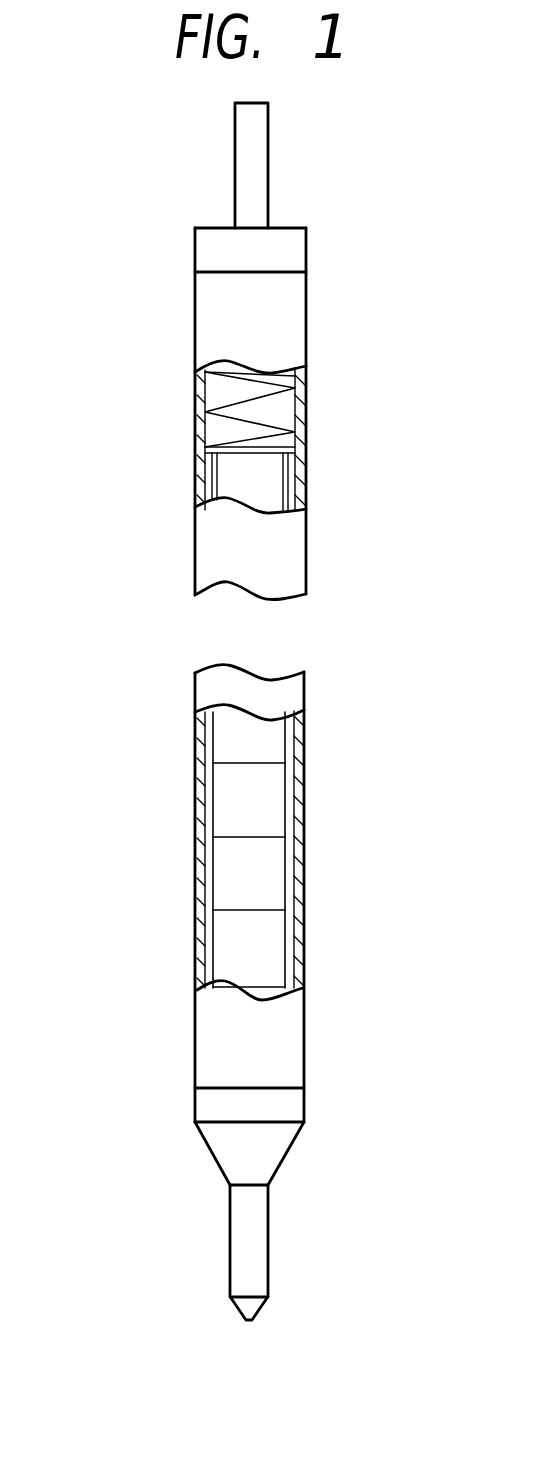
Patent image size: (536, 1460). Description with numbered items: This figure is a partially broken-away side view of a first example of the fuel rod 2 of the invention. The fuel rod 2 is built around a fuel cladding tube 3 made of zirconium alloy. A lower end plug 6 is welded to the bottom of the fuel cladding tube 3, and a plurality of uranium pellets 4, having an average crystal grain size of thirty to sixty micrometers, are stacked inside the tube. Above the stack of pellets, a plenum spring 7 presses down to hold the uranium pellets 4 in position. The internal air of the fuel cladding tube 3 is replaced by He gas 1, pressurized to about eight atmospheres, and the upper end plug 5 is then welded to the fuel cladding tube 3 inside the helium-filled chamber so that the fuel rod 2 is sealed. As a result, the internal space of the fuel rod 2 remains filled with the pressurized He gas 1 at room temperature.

The He gas 1 is at (290, 870).
The fuel rod 2 is at (176, 543).
The fuel cladding tube 3 is at (200, 865).
The uranium pellets 4 is at (263, 802).
The upper end plug 5 is at (306, 228).
The lower end plug 6 is at (268, 1232).
The plenum spring 7 is at (238, 398).